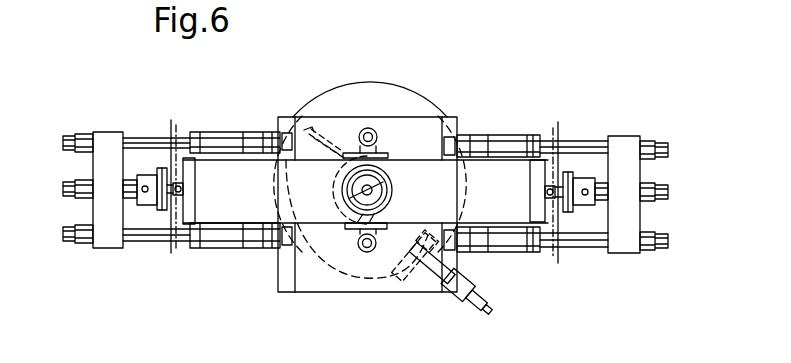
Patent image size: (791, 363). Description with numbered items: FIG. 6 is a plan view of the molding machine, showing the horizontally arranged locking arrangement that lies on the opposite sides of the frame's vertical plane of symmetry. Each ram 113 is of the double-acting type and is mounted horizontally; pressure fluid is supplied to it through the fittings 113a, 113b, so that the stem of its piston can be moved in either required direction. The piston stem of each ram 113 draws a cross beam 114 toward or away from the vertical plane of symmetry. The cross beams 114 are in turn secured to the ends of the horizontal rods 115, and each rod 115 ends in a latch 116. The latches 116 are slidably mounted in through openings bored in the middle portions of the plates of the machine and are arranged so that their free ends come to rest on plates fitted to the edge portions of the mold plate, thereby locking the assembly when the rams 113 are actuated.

The ram 113 is at (365, 191).
The fitting 113a is at (190, 186).
The fitting 113b is at (144, 192).
The cross beam 114 is at (103, 133).
The horizontal rod 115 is at (178, 134).
The latch 116 is at (282, 136).